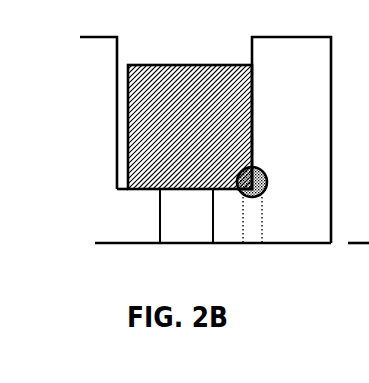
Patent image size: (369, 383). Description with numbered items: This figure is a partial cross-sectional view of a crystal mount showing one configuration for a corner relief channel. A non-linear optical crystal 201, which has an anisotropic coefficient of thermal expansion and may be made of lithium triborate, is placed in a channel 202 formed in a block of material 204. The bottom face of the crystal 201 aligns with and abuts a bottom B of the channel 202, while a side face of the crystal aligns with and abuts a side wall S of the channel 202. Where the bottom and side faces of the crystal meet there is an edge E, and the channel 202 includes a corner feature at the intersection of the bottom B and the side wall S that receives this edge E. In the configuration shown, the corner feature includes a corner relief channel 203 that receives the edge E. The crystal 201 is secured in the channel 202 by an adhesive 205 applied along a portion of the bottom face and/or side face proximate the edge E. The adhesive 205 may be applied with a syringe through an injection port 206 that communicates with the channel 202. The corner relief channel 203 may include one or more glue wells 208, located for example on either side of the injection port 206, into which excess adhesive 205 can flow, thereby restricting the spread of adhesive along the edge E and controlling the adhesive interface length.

The non-linear optical crystal 201 is at (182, 64).
The channel 202 is at (125, 52).
The corner relief channel 203 is at (266, 174).
The block of material 204 is at (297, 36).
The adhesive 205 is at (255, 175).
The injection port 206 is at (190, 245).
The glue wells 208 is at (252, 247).
The side wall S is at (252, 48).
The edge E is at (242, 187).
The bottom B is at (118, 189).